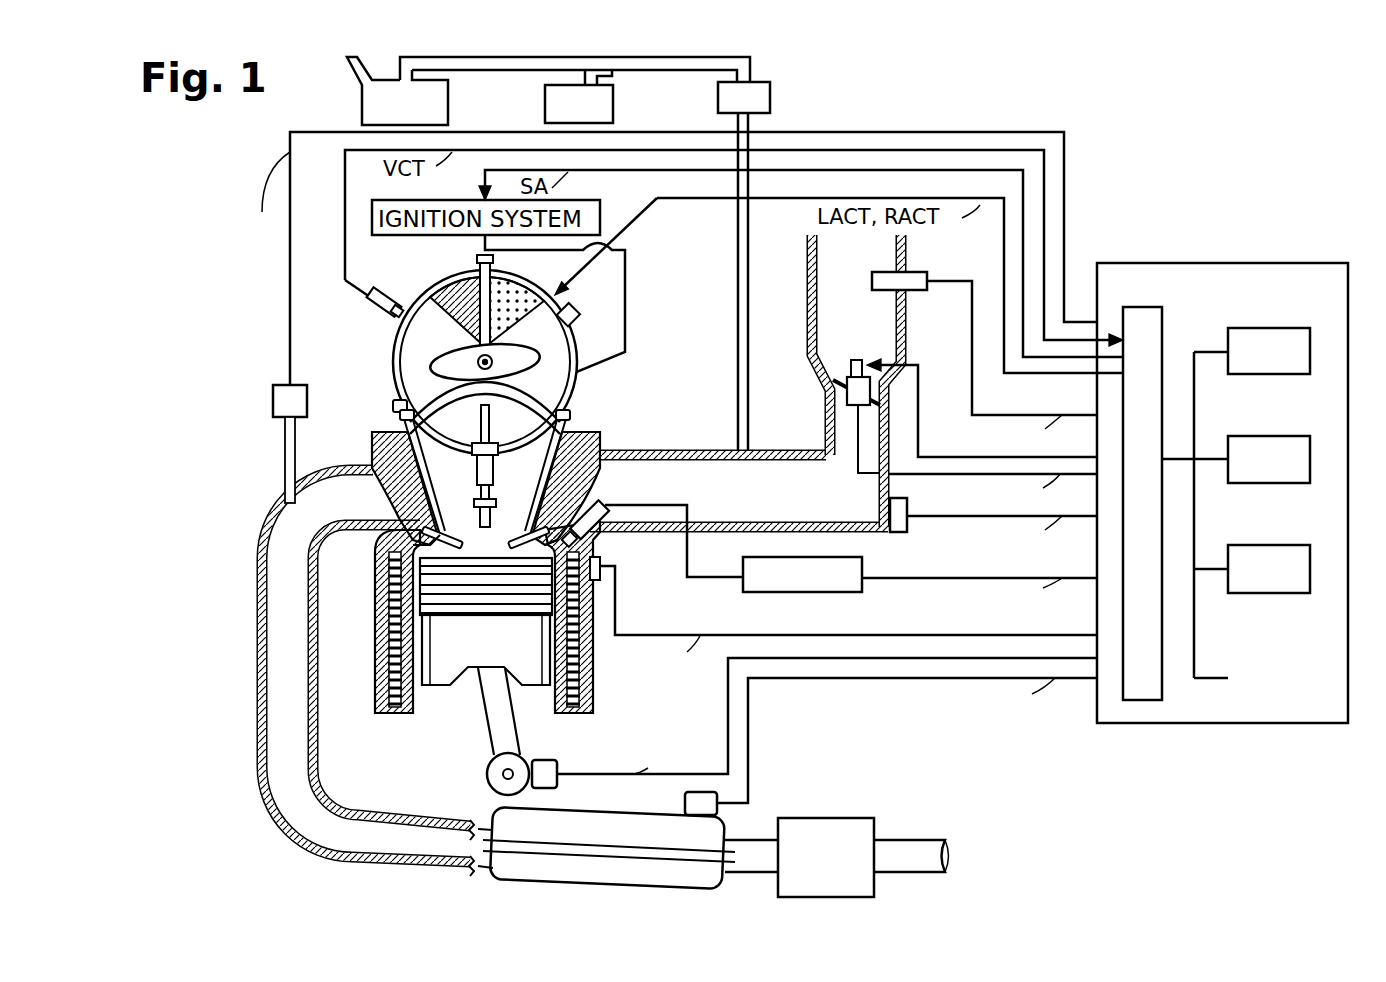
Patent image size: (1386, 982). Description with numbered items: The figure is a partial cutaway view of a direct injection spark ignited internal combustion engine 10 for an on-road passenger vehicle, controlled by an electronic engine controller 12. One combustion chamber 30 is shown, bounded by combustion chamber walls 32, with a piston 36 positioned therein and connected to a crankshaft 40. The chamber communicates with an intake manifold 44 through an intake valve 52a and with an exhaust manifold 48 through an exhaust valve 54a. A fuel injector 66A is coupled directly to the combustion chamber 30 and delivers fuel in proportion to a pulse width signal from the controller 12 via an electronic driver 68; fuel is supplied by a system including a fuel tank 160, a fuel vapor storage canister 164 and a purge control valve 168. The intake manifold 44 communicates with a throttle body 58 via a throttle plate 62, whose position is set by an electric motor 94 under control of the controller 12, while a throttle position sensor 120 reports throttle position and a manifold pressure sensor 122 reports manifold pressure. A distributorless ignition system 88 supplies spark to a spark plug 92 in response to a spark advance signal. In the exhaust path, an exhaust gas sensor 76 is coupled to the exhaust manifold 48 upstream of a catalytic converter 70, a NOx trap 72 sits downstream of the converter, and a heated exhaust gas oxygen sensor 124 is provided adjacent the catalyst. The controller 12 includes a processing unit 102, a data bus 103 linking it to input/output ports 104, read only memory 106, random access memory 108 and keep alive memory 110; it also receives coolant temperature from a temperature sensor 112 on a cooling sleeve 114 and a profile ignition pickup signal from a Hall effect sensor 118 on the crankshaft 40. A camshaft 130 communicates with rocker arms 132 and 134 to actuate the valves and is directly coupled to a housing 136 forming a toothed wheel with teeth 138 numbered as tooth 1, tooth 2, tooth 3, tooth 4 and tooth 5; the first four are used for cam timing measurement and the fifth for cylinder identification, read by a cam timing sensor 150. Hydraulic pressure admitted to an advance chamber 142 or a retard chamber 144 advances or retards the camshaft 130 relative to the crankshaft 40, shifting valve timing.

The tooth 1 is at (478, 258).
The tooth 2 is at (575, 320).
The tooth 3 is at (500, 456).
The tooth 4 is at (394, 400).
The tooth 5 is at (394, 312).
The internal combustion engine 10 is at (643, 358).
The electronic engine controller 12 is at (1300, 263).
The combustion chamber 30 is at (443, 548).
The combustion chamber walls 32 is at (415, 716).
The piston 36 is at (487, 668).
The crankshaft 40 is at (488, 770).
The intake manifold 44 is at (801, 508).
The exhaust manifold 48 is at (265, 535).
The intake valve 52a is at (560, 520).
The exhaust valve 54a is at (423, 517).
The throttle body 58 is at (822, 440).
The throttle plate 62 is at (850, 377).
The fuel injector 66A is at (596, 535).
The electronic driver 68 is at (862, 566).
The catalytic converter 70 is at (565, 810).
The NOx trap 72 is at (830, 818).
The exhaust gas sensor 76 is at (273, 386).
The distributorless ignition system 88 is at (606, 220).
The spark plug 92 is at (472, 456).
The electric motor 94 is at (871, 360).
The processing unit 102 is at (1282, 436).
The data bus 103 is at (1194, 352).
The input/output ports 104 is at (1128, 307).
The read only memory 106 is at (1258, 328).
The random access memory 108 is at (1282, 545).
The keep alive memory 110 is at (910, 272).
The temperature sensor 112 is at (600, 568).
The cooling sleeve 114 is at (578, 680).
The Hall effect sensor 118 is at (545, 760).
The throttle position sensor 120 is at (836, 392).
The manifold pressure sensor 122 is at (907, 510).
The heated exhaust gas oxygen sensor 124 is at (685, 804).
The camshaft 130 is at (438, 362).
The rocker arm 132 is at (402, 420).
The rocker arm 134 is at (568, 420).
The housing 136 is at (393, 380).
The teeth 138 is at (578, 320).
The advance chamber 142 is at (506, 294).
The retard chamber 144 is at (456, 292).
The cam timing sensor 150 is at (368, 304).
The fuel tank 160 is at (450, 105).
The fuel vapor storage canister 164 is at (613, 106).
The purge control valve 168 is at (770, 98).